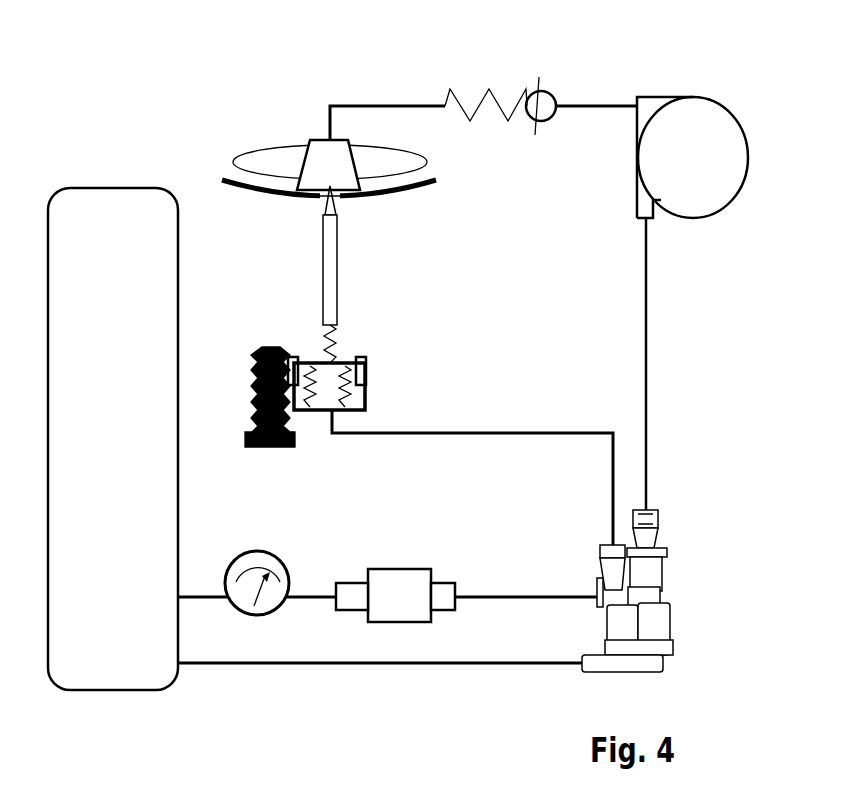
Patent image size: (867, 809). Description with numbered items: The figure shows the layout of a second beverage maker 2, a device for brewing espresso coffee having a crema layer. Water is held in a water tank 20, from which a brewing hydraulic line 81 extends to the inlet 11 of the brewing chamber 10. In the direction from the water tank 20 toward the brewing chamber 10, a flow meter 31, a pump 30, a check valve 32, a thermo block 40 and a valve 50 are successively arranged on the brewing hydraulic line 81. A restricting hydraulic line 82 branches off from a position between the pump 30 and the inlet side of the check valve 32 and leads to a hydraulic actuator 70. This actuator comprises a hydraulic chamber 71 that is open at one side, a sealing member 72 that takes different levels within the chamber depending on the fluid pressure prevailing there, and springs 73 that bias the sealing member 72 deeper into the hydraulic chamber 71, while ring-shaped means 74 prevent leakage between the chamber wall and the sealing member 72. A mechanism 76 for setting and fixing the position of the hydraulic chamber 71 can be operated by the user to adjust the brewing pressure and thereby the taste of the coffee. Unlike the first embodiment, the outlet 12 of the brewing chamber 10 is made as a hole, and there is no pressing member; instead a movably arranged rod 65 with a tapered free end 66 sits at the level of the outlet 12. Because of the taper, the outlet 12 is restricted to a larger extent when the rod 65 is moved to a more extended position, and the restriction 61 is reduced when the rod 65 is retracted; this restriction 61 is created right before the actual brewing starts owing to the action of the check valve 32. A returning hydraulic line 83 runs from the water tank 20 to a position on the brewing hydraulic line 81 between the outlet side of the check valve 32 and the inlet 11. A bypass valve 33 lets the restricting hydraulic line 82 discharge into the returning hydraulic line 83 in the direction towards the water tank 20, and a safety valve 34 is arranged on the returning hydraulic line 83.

The second beverage maker 2 is at (195, 130).
The brewing chamber 10 is at (278, 160).
The inlet of the brewing chamber 11 is at (330, 140).
The outlet of the brewing chamber 12 is at (340, 200).
The water tank 20 is at (125, 210).
The pump 30 is at (397, 569).
The flow meter 31 is at (258, 551).
The check valve 32 is at (650, 570).
The bypass valve 33 is at (612, 628).
The safety valve 34 is at (660, 622).
The thermo block 40 is at (712, 125).
The valve 50 is at (540, 92).
The restriction 61 is at (338, 200).
The rod 65 is at (325, 262).
The tapered free end 66 is at (327, 200).
The hydraulic actuator 70 is at (305, 412).
The hydraulic chamber 71 is at (367, 398).
The sealing member 72 is at (312, 368).
The springs 73 is at (312, 412).
The ring-shaped means 74 is at (367, 382).
The mechanism for setting the brewing pressure 76 is at (258, 386).
The brewing hydraulic line 81 is at (647, 293).
The restricting hydraulic line 82 is at (578, 433).
The returning hydraulic line 83 is at (278, 665).